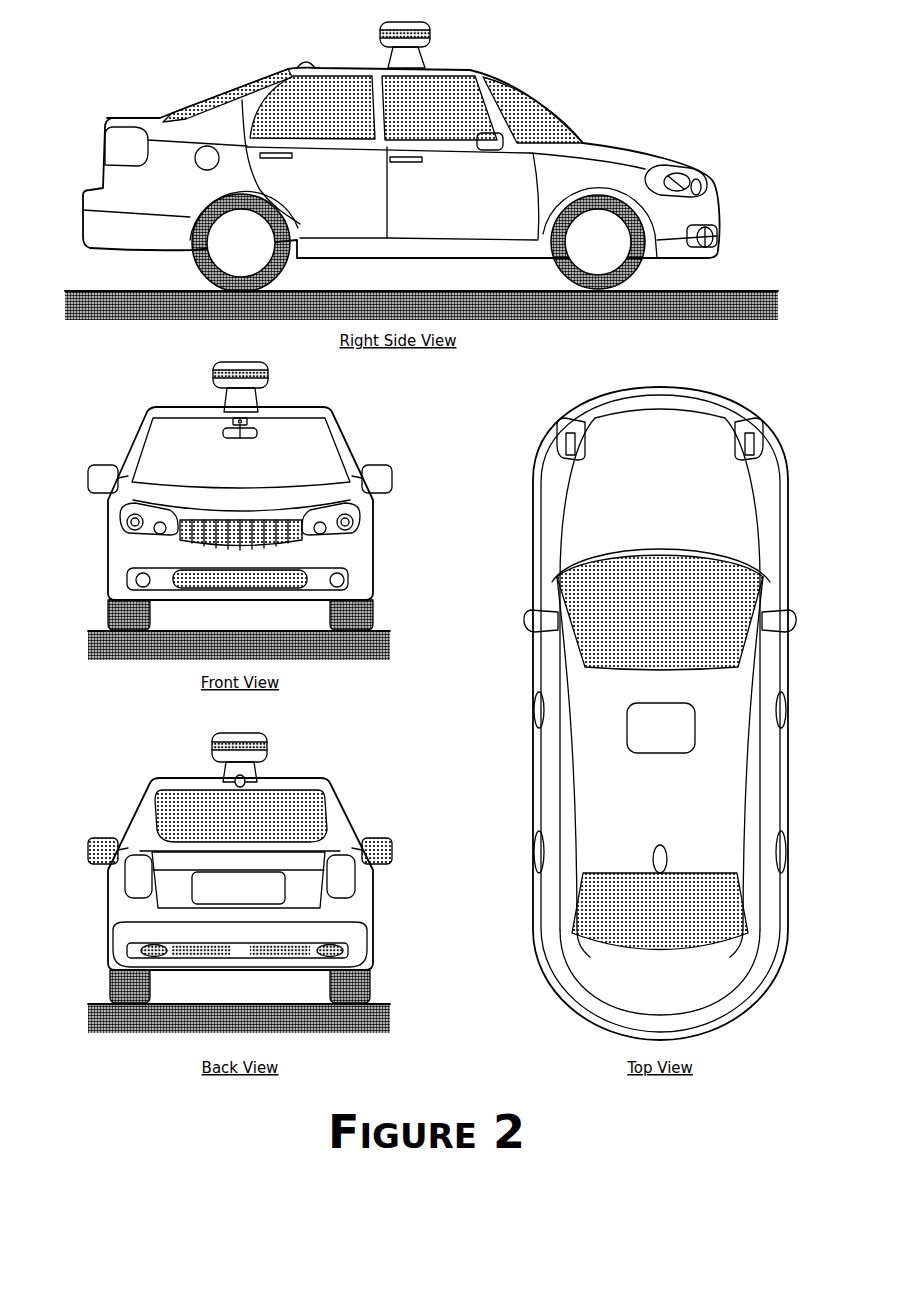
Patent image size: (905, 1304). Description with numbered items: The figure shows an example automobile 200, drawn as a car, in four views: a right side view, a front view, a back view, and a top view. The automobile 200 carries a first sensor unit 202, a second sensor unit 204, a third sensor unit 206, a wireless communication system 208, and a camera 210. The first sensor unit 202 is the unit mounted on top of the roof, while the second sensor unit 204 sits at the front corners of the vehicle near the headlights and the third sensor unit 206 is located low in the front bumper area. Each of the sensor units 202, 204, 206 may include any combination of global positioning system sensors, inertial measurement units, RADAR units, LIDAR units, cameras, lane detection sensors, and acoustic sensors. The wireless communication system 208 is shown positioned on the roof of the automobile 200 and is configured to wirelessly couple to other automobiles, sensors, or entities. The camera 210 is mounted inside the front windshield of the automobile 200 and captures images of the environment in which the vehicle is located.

The automobile 200 is at (76, 106).
The first sensor unit 202 is at (432, 42).
The second sensor unit 204 is at (703, 186).
The third sensor unit 206 is at (717, 236).
The wireless communication system 208 is at (302, 58).
The camera 210 is at (249, 421).